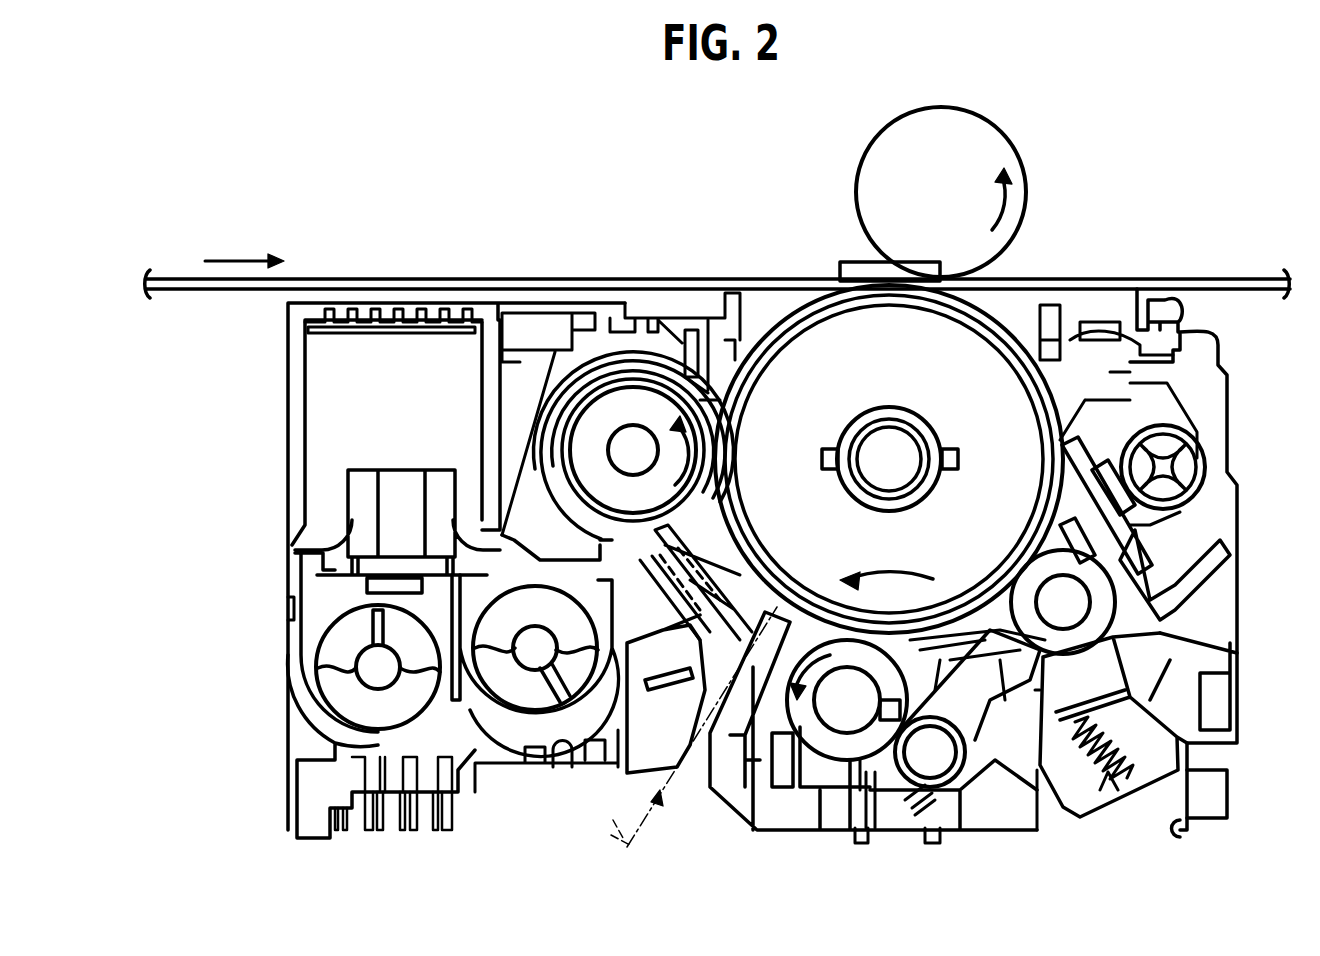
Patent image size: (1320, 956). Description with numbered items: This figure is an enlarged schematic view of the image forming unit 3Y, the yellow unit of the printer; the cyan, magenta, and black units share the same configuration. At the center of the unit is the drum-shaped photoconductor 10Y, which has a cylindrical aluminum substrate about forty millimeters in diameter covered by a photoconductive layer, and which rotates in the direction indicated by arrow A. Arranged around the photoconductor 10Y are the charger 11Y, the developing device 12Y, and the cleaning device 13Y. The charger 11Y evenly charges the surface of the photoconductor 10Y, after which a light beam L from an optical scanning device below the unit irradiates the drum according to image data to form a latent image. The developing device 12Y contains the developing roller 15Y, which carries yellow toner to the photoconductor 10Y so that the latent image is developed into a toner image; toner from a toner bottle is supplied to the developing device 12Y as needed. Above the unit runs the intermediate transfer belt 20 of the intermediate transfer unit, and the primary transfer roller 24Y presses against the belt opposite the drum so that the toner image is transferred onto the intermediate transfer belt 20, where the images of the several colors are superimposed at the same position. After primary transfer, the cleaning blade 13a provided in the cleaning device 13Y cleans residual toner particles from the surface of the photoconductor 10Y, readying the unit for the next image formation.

The image forming unit 3Y is at (1094, 108).
The intermediate transfer belt 20 is at (483, 277).
The primary transfer roller 24Y is at (1020, 200).
The photoconductor 10Y is at (797, 316).
The developing roller 15Y is at (603, 378).
The developing device 12Y is at (288, 613).
The cleaning device 13Y is at (1238, 548).
The cleaning blade 13a is at (1085, 448).
The charger 11Y is at (955, 830).